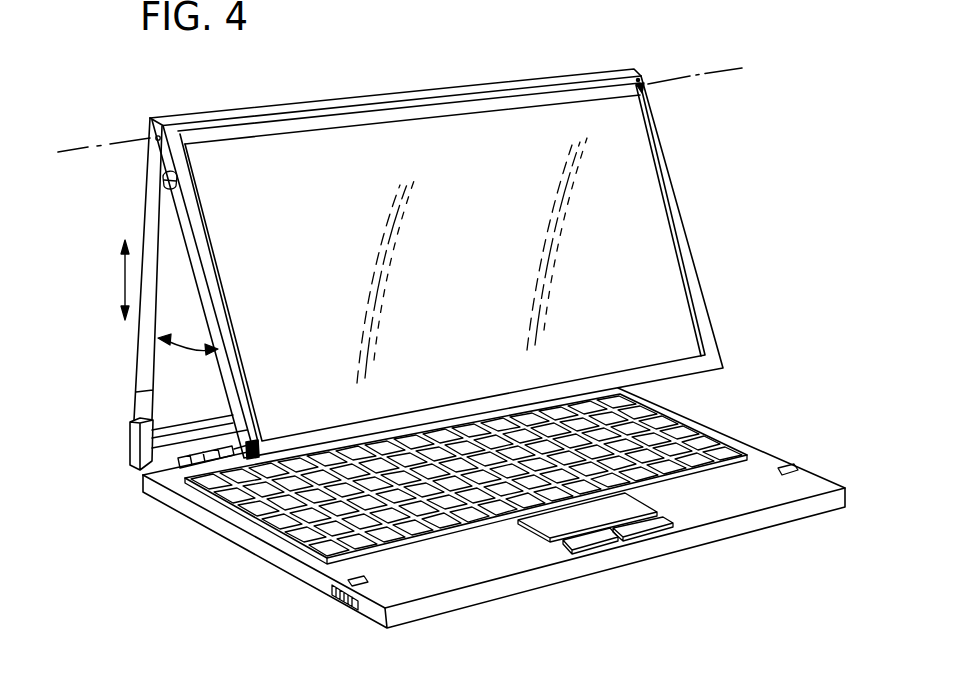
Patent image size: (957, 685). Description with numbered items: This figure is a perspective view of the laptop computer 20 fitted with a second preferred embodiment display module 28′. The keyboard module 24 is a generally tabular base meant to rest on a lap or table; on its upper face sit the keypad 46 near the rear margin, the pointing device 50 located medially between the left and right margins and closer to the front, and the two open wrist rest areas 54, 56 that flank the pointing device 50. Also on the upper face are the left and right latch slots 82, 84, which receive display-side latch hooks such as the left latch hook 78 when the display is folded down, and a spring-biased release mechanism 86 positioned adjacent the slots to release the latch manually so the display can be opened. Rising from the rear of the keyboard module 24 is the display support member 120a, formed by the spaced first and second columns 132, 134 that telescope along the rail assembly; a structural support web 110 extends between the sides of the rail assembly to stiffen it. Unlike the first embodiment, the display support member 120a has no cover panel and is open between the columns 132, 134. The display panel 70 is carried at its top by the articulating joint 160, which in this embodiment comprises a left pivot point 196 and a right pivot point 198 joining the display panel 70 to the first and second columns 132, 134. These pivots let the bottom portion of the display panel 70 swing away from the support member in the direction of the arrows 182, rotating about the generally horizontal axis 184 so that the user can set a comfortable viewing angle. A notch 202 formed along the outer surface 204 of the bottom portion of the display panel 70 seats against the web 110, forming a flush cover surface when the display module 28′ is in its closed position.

The laptop computer 20 is at (744, 176).
The keyboard module 24 is at (753, 432).
The display module 28′ is at (677, 170).
The keypad 46 is at (640, 452).
The pointing device 50 is at (633, 508).
The wrist rest area 54 is at (483, 565).
The wrist rest area 56 is at (762, 501).
The display panel 70 is at (633, 230).
The left latch hook 78 is at (174, 192).
The left latch slot 82 is at (365, 580).
The right latch slot 84 is at (796, 463).
The spring-biased release mechanism 86 is at (334, 596).
The web 110 is at (186, 432).
The display support member 120a is at (142, 356).
The first column 132 is at (145, 215).
The second column 134 is at (648, 87).
The articulating joint 160 is at (165, 108).
The arrows 182 is at (187, 340).
The axis 184 is at (86, 146).
The left pivot point 196 is at (155, 136).
The right pivot point 198 is at (644, 81).
The notch 202 is at (250, 447).
The outer surface 204 is at (222, 374).